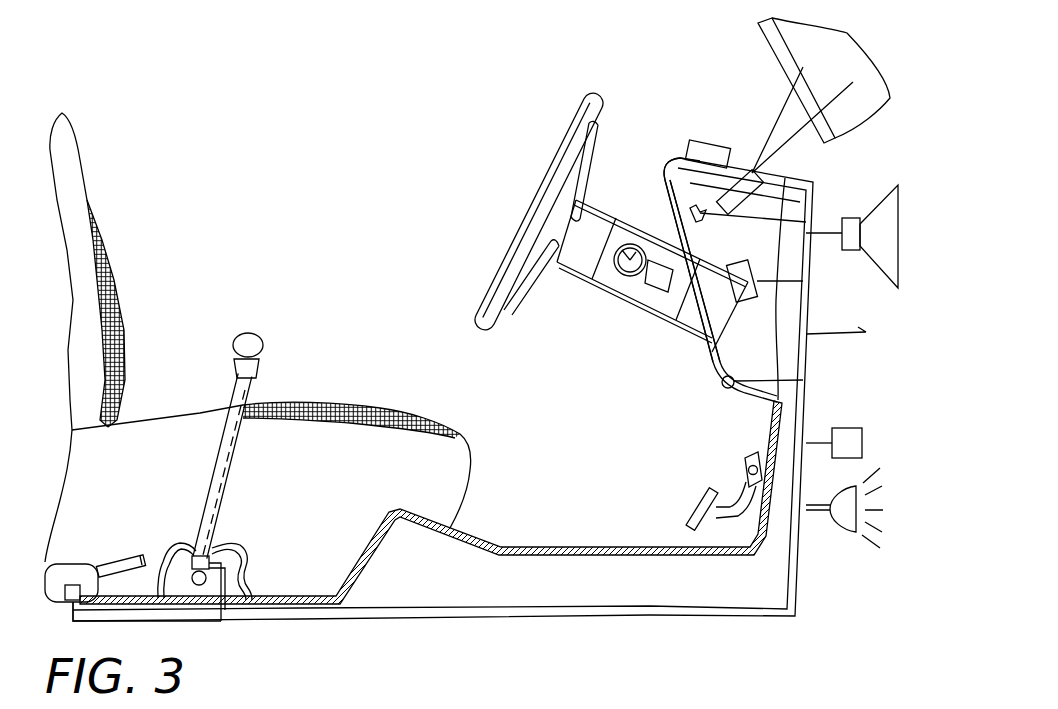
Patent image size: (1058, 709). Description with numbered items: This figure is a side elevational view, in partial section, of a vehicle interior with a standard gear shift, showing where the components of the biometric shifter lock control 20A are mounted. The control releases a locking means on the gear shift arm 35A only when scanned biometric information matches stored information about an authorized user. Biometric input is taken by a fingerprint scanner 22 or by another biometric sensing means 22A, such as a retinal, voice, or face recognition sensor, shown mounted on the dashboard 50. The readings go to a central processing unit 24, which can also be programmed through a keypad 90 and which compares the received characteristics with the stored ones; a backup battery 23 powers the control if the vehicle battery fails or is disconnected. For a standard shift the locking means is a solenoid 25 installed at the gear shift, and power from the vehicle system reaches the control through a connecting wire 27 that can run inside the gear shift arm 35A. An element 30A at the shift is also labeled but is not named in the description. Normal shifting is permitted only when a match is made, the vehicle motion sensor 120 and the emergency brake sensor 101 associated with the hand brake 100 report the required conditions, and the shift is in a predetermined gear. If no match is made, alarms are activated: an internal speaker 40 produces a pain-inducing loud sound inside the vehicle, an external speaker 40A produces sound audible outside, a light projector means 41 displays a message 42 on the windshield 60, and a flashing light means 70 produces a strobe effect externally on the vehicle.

The biometric shifter lock control 20A is at (230, 544).
The fingerprint scanner 22 is at (724, 377).
The biometric sensing means 22A is at (695, 152).
The backup battery 23 is at (664, 174).
The central processing unit 24 is at (670, 180).
The solenoid 25 is at (202, 540).
The connecting wire 27 is at (825, 338).
The shift lever knob 30A is at (233, 347).
The gear shift arm 35A is at (204, 432).
The internal speaker means 40 is at (712, 236).
The external speaker means 40A is at (867, 252).
The light projector means 41 is at (810, 210).
The message 42 is at (853, 82).
The dashboard 50 is at (673, 162).
The windshield 60 is at (803, 89).
The flashing light means 70 is at (836, 528).
The keypad 90 is at (690, 215).
The hand brake 100 is at (110, 566).
The emergency brake sensor 101 is at (58, 602).
The vehicle motion sensor 120 is at (870, 420).